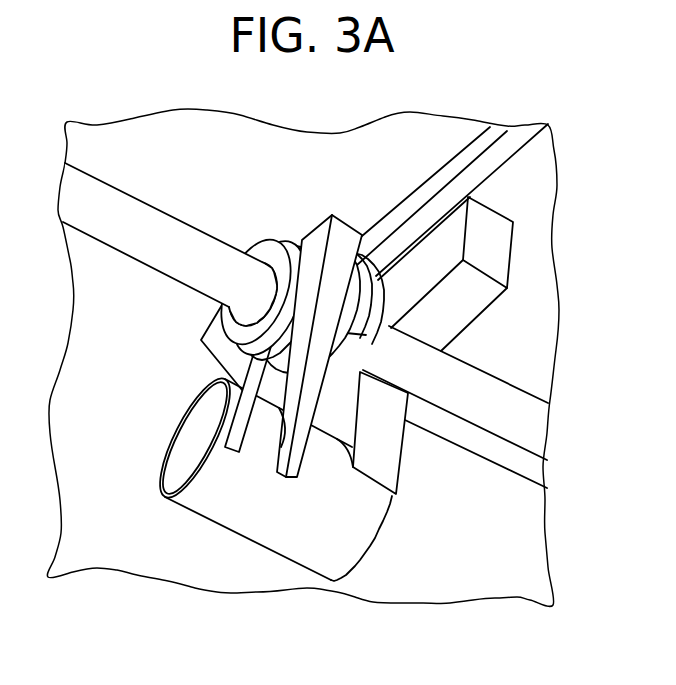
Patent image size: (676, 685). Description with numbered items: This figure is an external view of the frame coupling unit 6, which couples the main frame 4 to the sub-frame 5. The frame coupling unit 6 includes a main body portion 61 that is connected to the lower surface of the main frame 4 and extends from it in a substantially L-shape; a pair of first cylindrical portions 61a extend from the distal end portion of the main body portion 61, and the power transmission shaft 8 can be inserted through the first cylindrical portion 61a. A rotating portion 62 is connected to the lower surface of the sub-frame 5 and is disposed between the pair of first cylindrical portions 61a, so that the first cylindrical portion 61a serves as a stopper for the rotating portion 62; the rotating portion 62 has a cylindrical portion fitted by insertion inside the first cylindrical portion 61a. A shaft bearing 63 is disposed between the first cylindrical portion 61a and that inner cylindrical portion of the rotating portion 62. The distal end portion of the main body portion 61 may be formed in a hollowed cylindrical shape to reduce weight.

The main frame 4 is at (520, 351).
The sub-frame 5 is at (134, 333).
The frame coupling unit 6 is at (424, 565).
The power transmission shaft 8 is at (452, 391).
The main body portion 61 is at (396, 472).
The first cylindrical portion 61a is at (293, 238).
The rotating portion 62 is at (353, 233).
The shaft bearing 63 is at (261, 247).